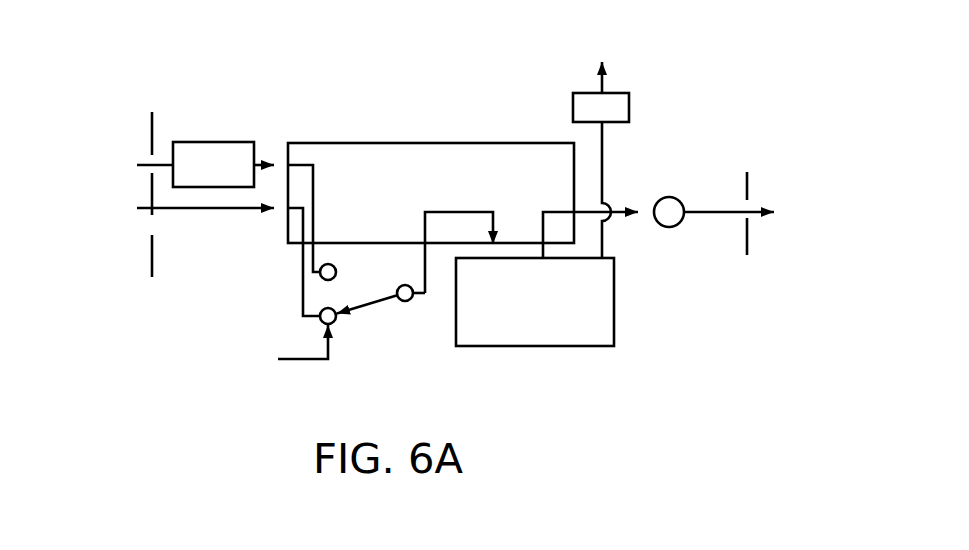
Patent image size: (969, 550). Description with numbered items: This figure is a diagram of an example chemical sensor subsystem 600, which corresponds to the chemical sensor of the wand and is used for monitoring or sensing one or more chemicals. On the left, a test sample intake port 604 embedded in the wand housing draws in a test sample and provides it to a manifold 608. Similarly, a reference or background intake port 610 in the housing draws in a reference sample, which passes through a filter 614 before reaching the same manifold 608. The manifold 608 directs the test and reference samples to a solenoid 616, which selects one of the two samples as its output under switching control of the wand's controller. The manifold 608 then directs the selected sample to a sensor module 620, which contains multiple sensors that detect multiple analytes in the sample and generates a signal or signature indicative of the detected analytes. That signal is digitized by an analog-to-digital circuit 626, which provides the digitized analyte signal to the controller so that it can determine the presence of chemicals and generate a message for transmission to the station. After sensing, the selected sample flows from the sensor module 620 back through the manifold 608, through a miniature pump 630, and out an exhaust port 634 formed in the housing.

The chemical sensor subsystem 600 is at (398, 55).
The test sample intake port 604 is at (150, 248).
The manifold 608 is at (386, 143).
The reference or background intake port 610 is at (150, 148).
The filter 614 is at (241, 142).
The solenoid 616 is at (363, 317).
The sensor module 620 is at (614, 292).
The analog-to-digital (A/D) circuit 626 is at (629, 100).
The miniature pump 630 is at (673, 197).
The exhaust port 634 is at (748, 237).